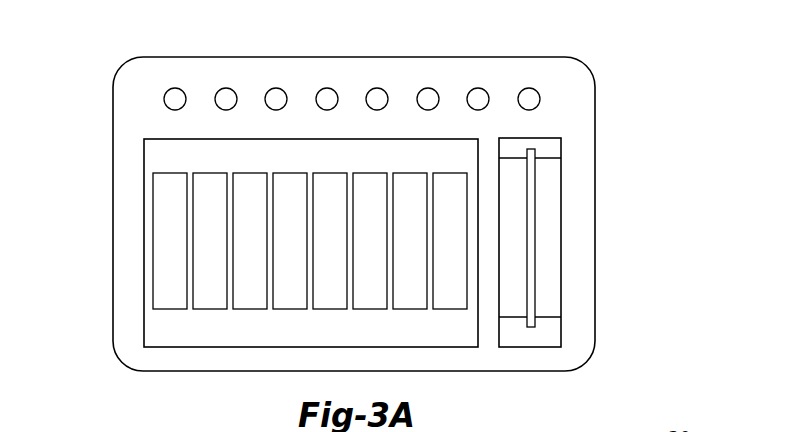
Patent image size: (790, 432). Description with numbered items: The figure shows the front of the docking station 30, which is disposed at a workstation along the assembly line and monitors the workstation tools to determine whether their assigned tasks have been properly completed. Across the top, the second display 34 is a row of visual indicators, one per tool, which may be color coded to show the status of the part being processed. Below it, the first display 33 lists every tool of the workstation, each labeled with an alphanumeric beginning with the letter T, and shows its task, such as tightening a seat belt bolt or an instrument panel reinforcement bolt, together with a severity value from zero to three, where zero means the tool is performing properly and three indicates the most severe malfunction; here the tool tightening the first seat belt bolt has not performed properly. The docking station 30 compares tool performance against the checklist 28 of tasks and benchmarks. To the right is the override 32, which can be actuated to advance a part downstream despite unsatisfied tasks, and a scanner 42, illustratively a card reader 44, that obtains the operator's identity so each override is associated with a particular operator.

The docking station 30 is at (599, 65).
The second display 34 is at (158, 99).
The checklist 28 is at (295, 271).
The first display 33 is at (156, 330).
The override 32 is at (553, 209).
The scanner 42 is at (606, 238).
The card reader 44 is at (628, 300).